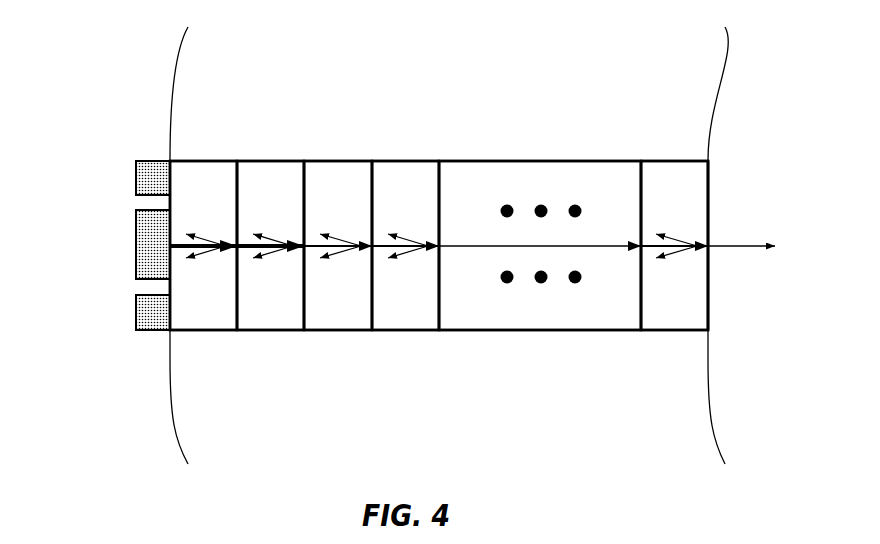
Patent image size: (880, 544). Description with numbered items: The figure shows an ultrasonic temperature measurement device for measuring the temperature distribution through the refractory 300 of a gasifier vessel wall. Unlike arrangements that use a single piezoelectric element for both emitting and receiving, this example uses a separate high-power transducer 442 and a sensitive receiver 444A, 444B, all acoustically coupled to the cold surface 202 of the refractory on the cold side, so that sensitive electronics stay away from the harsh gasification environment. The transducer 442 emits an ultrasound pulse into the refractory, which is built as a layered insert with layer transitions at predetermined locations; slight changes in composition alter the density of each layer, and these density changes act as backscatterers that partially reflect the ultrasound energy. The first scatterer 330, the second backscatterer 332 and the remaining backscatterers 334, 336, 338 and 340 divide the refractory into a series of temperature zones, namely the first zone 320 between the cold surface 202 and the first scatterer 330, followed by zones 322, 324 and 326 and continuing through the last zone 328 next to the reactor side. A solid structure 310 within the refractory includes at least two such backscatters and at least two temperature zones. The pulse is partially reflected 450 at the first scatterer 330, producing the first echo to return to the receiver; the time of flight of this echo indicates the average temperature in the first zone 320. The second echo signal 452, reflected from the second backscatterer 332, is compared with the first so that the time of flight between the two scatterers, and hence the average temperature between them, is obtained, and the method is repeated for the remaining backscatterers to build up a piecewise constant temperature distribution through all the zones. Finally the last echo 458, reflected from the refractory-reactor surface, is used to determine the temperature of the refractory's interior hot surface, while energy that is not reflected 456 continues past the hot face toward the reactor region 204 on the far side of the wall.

The refractory 300 is at (420, 100).
The first zone 320 is at (185, 201).
The second zone 322 is at (251, 201).
The third zone 324 is at (319, 201).
The fourth zone 326 is at (387, 201).
The last zone 328 is at (655, 201).
The solid structure 310 is at (533, 331).
The first scatterer 330 is at (229, 331).
The second backscatterer 332 is at (297, 331).
The backscatterer 334 is at (364, 331).
The backscatterer 336 is at (432, 331).
The backscatterer 340 is at (634, 331).
The backscatterer 338 is at (708, 202).
The cold surface 202 is at (170, 289).
The second cladding region 204 is at (708, 324).
The transducer 442 is at (136, 249).
The receiver 444A is at (136, 183).
The receiver 444B is at (136, 315).
The partial reflection 450 is at (206, 318).
The second echo signal 452 is at (262, 252).
The output light 456 is at (735, 250).
The last echo 458 is at (668, 252).